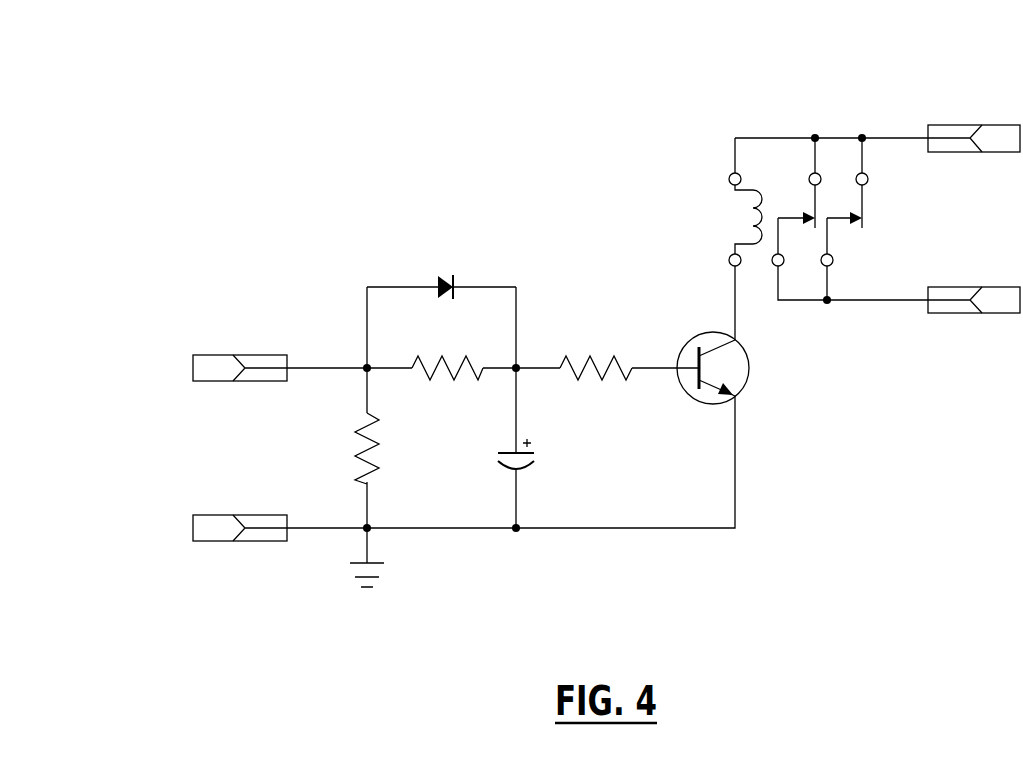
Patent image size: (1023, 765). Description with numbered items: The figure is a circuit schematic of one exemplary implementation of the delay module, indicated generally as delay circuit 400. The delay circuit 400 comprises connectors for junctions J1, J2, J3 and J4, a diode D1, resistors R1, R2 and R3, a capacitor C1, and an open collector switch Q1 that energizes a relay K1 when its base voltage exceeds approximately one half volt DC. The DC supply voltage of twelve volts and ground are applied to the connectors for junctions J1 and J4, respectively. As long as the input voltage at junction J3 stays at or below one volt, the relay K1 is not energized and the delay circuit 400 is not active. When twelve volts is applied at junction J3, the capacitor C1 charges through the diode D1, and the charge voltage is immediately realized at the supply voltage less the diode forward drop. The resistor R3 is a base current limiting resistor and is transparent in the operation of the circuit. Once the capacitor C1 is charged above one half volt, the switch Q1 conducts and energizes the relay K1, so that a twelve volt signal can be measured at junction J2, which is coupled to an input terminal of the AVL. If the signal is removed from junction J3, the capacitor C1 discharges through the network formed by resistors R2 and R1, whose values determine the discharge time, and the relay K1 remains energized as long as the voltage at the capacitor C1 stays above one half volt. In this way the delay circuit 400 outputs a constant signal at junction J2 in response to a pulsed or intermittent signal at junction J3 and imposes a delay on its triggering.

The delay circuit 400 is at (272, 182).
The junction J3 is at (240, 349).
The junction J4 is at (240, 510).
The resistor R1 is at (393, 448).
The resistor R2 is at (447, 349).
The resistor R3 is at (596, 349).
The diode D1 is at (445, 268).
The capacitor C1 is at (541, 453).
The open collector switch Q1 is at (736, 373).
The relay K1 is at (810, 219).
The junction J1 is at (974, 156).
The junction J2 is at (974, 319).